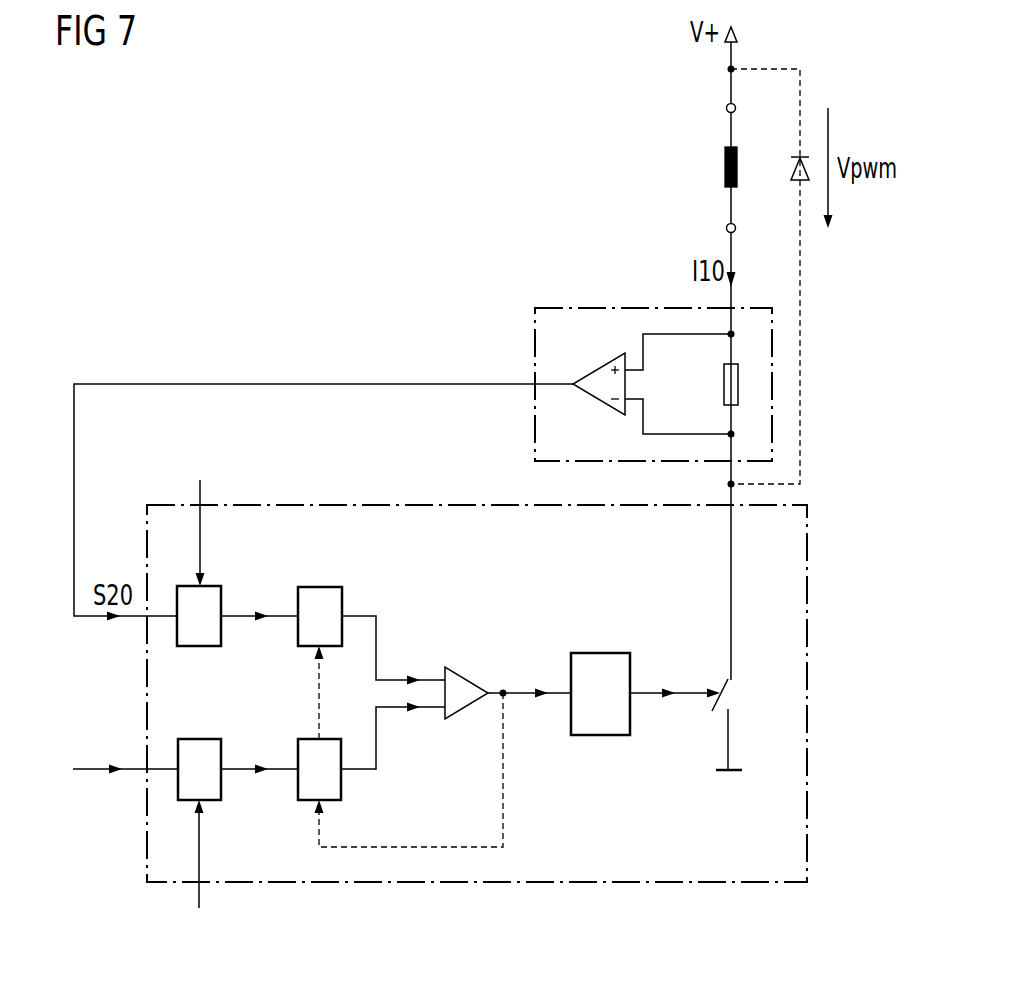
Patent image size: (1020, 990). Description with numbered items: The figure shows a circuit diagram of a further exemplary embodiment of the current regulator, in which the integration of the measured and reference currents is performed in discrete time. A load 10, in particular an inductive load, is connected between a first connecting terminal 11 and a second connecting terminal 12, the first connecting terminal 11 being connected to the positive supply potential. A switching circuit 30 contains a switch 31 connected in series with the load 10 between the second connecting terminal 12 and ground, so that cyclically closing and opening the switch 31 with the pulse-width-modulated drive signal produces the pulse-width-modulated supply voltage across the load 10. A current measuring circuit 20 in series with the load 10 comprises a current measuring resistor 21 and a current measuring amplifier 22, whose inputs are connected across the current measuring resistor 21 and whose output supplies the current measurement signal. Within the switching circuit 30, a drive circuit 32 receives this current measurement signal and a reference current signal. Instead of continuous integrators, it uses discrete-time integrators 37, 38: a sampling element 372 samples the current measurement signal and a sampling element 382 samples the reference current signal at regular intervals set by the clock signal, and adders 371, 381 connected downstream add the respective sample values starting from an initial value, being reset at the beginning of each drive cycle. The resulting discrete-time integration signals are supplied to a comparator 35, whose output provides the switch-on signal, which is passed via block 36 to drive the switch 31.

The load 10 is at (725, 172).
The first connecting terminal 11 is at (726, 108).
The second connecting terminal 12 is at (726, 228).
The current measuring circuit 20 is at (604, 308).
The current measuring resistor 21 is at (724, 385).
The current measuring amplifier 22 is at (600, 368).
The switching circuit 30 is at (490, 882).
The switch 31 is at (729, 687).
The drive circuit 32 is at (558, 814).
The comparator 35 is at (465, 678).
The driver circuit 36 is at (602, 653).
The discrete-time integrator 37 is at (311, 597).
The discrete-time integrator 38 is at (311, 768).
The adder 371 is at (342, 603).
The sampling element 372 is at (213, 586).
The adder 381 is at (341, 785).
The sampling element 382 is at (200, 739).